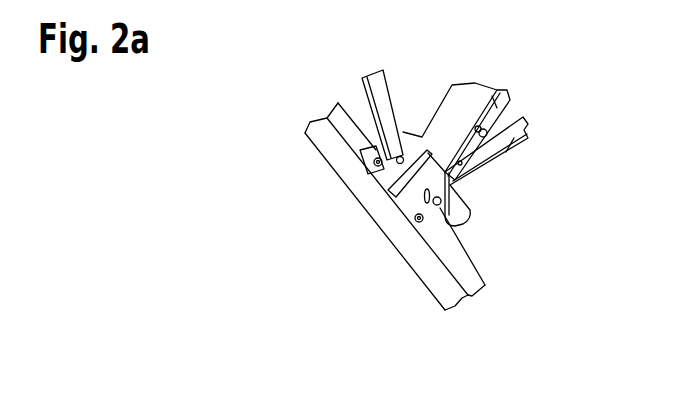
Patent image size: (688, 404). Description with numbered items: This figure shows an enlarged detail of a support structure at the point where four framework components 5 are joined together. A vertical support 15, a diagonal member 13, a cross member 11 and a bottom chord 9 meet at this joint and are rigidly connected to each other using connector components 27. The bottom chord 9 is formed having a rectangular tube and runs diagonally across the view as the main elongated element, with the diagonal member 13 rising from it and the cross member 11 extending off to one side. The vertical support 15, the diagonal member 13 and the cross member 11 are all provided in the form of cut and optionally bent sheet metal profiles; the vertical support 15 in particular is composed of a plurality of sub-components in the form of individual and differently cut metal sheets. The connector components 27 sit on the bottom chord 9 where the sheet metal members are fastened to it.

The framework components 5 is at (334, 223).
The bottom chord 9 is at (435, 278).
The cross member 11 is at (517, 142).
The diagonal member 13 is at (365, 90).
The vertical support 15 is at (474, 98).
The connector components 27 is at (373, 166).